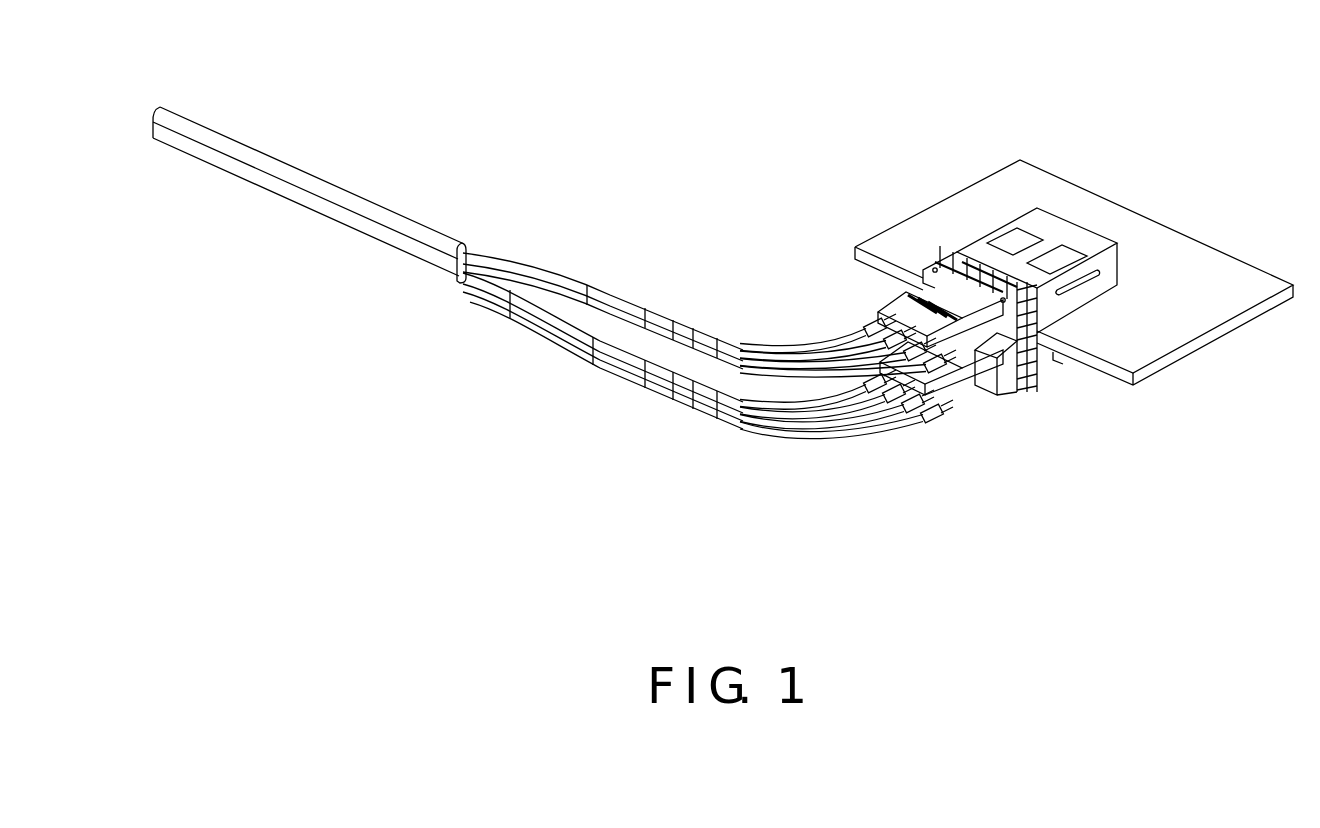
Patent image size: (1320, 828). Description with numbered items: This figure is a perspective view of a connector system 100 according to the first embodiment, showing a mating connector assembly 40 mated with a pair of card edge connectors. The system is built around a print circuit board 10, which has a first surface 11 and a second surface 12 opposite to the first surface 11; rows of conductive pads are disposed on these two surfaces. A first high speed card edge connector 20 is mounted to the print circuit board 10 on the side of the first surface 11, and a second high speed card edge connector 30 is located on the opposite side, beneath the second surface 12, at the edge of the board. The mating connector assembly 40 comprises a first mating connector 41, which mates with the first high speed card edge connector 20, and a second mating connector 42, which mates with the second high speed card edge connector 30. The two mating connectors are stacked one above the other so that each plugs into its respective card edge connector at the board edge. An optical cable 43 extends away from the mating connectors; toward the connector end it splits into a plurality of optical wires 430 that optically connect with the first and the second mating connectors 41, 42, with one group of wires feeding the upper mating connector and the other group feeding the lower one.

The connector system 100 is at (892, 190).
The print circuit board 10 is at (1135, 245).
The first surface 11 is at (1182, 265).
The second surface 12 is at (1200, 352).
The first high speed card edge connector 20 is at (1055, 253).
The second high speed card edge connector 30 is at (1048, 358).
The mating connector assembly 40 is at (880, 308).
The first mating connector 41 is at (988, 350).
The second mating connector 42 is at (1008, 372).
The optical cable 43 is at (283, 170).
The optical wires 430 is at (595, 298).